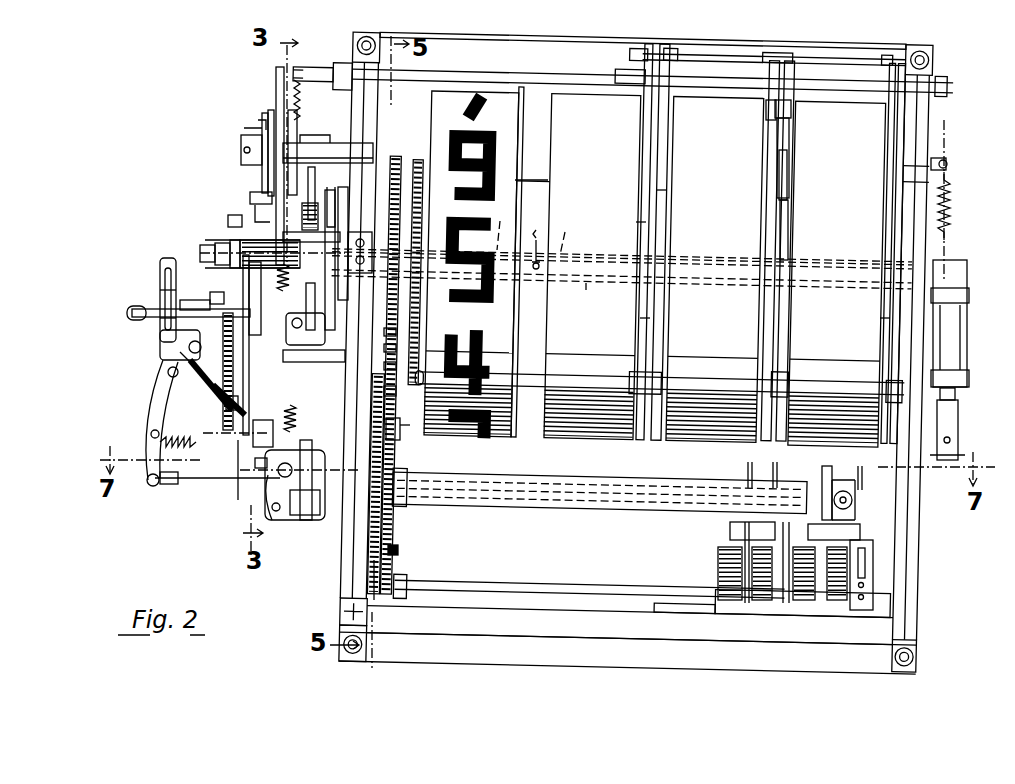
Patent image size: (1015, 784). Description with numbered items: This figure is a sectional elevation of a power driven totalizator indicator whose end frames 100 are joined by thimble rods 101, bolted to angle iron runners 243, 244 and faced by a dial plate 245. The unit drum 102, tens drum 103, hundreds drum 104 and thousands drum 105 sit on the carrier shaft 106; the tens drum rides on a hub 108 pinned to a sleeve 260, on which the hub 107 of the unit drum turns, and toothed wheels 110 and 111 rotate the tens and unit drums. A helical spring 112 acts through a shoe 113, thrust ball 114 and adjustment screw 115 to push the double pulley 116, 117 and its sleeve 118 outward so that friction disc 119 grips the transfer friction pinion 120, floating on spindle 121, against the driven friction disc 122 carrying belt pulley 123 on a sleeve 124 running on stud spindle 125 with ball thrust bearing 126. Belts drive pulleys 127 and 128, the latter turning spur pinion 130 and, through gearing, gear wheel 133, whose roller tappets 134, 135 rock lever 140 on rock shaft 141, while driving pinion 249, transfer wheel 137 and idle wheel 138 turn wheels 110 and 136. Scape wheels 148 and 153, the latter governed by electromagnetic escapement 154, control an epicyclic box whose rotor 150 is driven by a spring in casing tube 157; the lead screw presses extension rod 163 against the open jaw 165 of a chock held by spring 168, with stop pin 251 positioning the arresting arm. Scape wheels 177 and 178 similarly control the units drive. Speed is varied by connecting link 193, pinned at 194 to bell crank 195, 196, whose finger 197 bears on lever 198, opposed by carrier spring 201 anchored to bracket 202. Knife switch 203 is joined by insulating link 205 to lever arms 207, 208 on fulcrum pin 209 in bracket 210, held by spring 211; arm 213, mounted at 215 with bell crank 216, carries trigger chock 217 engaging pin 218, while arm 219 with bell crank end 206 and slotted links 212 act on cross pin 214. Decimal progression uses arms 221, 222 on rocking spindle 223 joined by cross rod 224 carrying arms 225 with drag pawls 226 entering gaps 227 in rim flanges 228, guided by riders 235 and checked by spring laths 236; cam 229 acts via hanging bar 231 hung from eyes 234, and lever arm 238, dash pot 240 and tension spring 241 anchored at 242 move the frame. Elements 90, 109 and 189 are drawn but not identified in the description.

The coil 90 is at (718, 566).
The end frames 100 is at (938, 54).
The thimble rods 101 is at (586, 72).
The unit drum 102 is at (512, 105).
The tens drum 103 is at (592, 267).
The hundreds drum 104 is at (715, 269).
The thousands drum 105 is at (837, 274).
The carrier shaft 106 is at (596, 258).
The hub of unit drum 107 is at (500, 246).
The hub 108 is at (565, 236).
The hook 109 is at (529, 242).
The toothed wheel 110 is at (393, 162).
The toothed wheel 111 is at (414, 164).
The helical spring 112 is at (226, 270).
The shoe 113 is at (232, 238).
The thrust ball 114 is at (218, 243).
The tension adjustment screw 115 is at (200, 252).
The belt pulley 116 is at (254, 208).
The pulley 117 is at (206, 248).
The sleeve 118 is at (230, 218).
The friction disc 119 is at (350, 222).
The transfer friction pinion 120 is at (252, 195).
The guide spindle 121 is at (240, 152).
The driven friction disc 122 is at (276, 80).
The belt pulley 123 is at (245, 142).
The sleeve 124 is at (298, 140).
The stud spindle 125 is at (260, 160).
The ball thrust bearing 126 is at (265, 150).
The belt pulley 127 is at (236, 480).
The belt pulley 128 is at (246, 440).
The spur pinion 130 is at (394, 392).
The gear wheel 133 is at (397, 528).
The roller tappet 134 is at (410, 428).
The roller tappet 135 is at (398, 550).
The wheel 136 is at (376, 572).
The transfer wheel 137 is at (396, 348).
The idle wheel 138 is at (396, 333).
The rocking lever 140 is at (408, 504).
The rock shaft 141 is at (604, 587).
The scape wheel 148 is at (857, 470).
The rotor element 150 is at (845, 490).
The scape wheel 153 is at (822, 475).
The electromagnetic escapement device 154 is at (820, 538).
The casing tube 157 is at (665, 508).
The extension rod 163 is at (220, 482).
The open jaw 165 is at (262, 500).
The spring 168 is at (180, 450).
The scape wheel 177 is at (748, 465).
The scape wheel 178 is at (777, 470).
The bracket 189 is at (722, 534).
The connecting link 193 is at (313, 316).
The pin connection 194 is at (310, 336).
The bell crank arm 195 is at (218, 385).
The short arm 196 is at (196, 366).
The offset finger 197 is at (200, 374).
The lever 198 is at (150, 438).
The carrier spring 201 is at (300, 80).
The bracket 202 is at (312, 72).
The knife switch 203 is at (393, 440).
The insulating link 205 is at (236, 398).
The bell crank end 206 is at (190, 350).
The lever arm 207 is at (160, 328).
The lever arm 208 is at (226, 400).
The fulcrum pin 209 is at (170, 368).
The bracket 210 is at (312, 360).
The spring 211 is at (168, 340).
The slotted links 212 is at (160, 290).
The trigger arm 213 is at (165, 262).
The cross pin 214 is at (160, 318).
The mounting 215 is at (263, 292).
The bell crank 216 is at (262, 300).
The trigger chock 217 is at (221, 288).
The offset pin 218 is at (197, 300).
The arm 219 is at (160, 410).
The rocking frame arm 221 is at (642, 320).
The rocking frame arm 222 is at (882, 320).
The rocking spindle 223 is at (694, 372).
The cross rod 224 is at (843, 50).
The light arms 225 is at (776, 68).
The drag pawls 226 is at (793, 108).
The gaps 227 is at (793, 148).
The rim flanges 228 is at (790, 166).
The cam 229 is at (637, 219).
The hanging bar 231 is at (668, 192).
The eyes 234 is at (640, 82).
The riders 235 is at (760, 114).
The spring lath 236 is at (790, 226).
The lever arm 238 is at (958, 430).
The swinging dash pot 240 is at (960, 351).
The tension spring 241 is at (951, 210).
The frame attachment 242 is at (945, 166).
The angle iron runner 243 is at (643, 43).
The angle iron runner 244 is at (630, 649).
The dial plate 245 is at (540, 178).
The driving pinion 249 is at (396, 366).
The stop pin 251 is at (256, 440).
The sleeve 260 is at (588, 283).